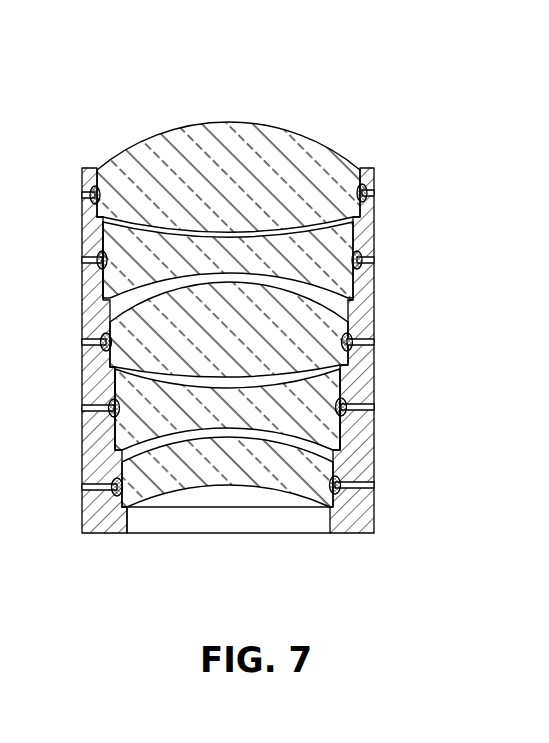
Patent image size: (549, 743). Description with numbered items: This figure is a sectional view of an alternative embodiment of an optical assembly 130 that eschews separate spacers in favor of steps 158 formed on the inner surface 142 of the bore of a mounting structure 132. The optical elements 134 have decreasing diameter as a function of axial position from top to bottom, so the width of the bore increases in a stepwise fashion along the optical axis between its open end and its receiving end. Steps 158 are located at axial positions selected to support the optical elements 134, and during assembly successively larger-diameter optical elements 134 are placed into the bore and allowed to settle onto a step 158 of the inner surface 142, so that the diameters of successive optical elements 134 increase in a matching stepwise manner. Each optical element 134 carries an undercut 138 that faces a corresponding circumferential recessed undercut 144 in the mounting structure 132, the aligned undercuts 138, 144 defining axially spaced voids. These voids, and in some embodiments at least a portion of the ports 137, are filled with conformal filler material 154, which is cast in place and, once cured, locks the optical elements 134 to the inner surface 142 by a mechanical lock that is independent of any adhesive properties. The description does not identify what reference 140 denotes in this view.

The optical assembly 130 is at (303, 98).
The mounting structure 132 is at (373, 177).
The optical elements 134 is at (173, 315).
The ports 137 is at (85, 496).
The undercuts 138 is at (372, 204).
The housing wall section 140 is at (80, 287).
The inner surface 142 is at (330, 518).
The circumferential recessed undercuts 144 is at (88, 186).
The conformal filler material 154 is at (373, 256).
The steps 158 is at (80, 220).